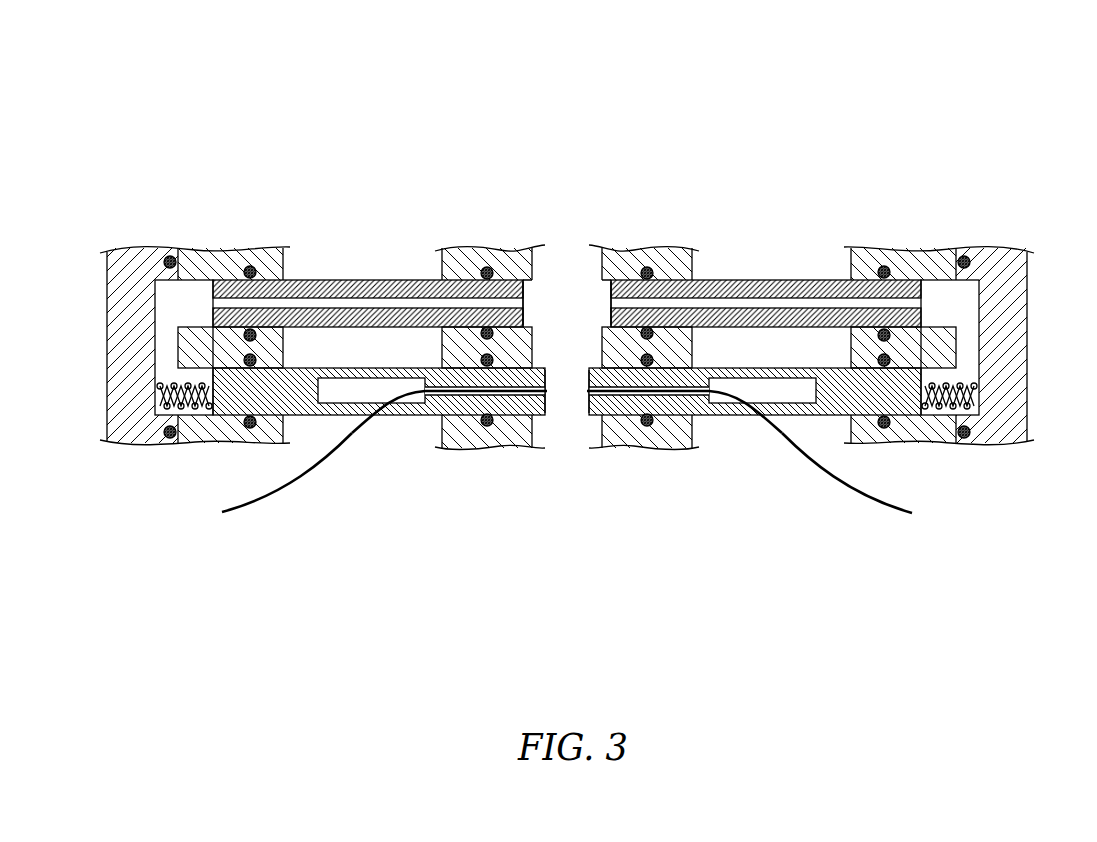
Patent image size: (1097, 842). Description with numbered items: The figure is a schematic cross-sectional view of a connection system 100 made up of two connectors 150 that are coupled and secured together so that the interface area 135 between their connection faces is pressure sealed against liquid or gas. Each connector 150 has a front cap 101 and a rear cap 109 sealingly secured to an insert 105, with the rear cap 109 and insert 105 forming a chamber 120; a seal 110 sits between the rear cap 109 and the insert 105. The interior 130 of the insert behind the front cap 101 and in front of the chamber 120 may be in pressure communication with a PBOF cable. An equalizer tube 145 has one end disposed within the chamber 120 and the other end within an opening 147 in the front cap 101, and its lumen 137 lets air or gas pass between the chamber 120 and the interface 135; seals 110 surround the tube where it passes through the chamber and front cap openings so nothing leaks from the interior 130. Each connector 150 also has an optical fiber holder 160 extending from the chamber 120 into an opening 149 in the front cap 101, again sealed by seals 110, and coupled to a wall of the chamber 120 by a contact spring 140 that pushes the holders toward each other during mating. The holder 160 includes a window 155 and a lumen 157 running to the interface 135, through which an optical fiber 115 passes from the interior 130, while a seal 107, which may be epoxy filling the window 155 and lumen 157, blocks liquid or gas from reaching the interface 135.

The connection system 100 is at (537, 92).
The front cap 101 is at (454, 248).
The insert 105 is at (217, 248).
The seal 107 is at (420, 406).
The rear cap 109 is at (122, 248).
The seal 110 is at (172, 256).
The optical fiber 115 is at (258, 517).
The chamber 120 is at (178, 311).
The interior of the connector 130 is at (384, 238).
The interface area 135 is at (533, 286).
The lumen 137 is at (337, 290).
The contact spring 140 is at (162, 414).
The equalizer tube 145 is at (304, 272).
The opening 147 is at (557, 292).
The opening 149 is at (538, 418).
The connector 150 is at (298, 582).
The window 155 is at (405, 410).
The lumen 157 is at (466, 400).
The optical fiber holder 160 is at (368, 418).